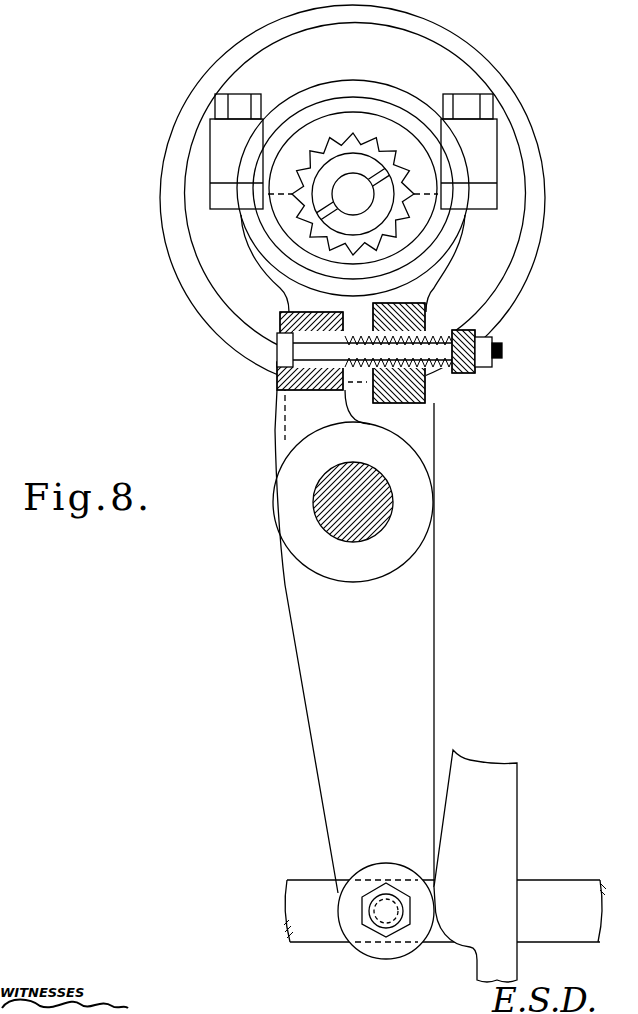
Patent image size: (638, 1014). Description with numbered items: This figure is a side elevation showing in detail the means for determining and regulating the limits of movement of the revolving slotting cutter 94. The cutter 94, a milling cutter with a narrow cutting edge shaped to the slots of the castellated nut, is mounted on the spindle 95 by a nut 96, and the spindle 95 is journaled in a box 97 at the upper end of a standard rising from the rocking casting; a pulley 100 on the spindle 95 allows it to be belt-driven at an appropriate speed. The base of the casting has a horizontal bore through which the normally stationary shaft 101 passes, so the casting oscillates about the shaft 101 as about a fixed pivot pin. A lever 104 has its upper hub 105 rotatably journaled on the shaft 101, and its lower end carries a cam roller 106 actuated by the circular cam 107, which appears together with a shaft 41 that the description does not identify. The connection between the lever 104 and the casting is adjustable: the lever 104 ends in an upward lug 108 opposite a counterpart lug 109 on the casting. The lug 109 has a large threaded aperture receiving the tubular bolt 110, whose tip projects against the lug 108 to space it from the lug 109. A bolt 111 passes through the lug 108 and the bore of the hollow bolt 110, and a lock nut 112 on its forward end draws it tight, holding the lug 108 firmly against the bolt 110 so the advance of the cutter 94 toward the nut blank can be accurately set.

The shaft 41 is at (575, 893).
The slotting cutter 94 is at (343, 146).
The spindle 95 is at (353, 194).
The nut 96 is at (353, 194).
The box 97 is at (353, 151).
The pulley 100 is at (495, 90).
The shaft 101 is at (355, 473).
The lever 104 is at (353, 554).
The upper hub 105 is at (353, 502).
The cam roller 106 is at (378, 870).
The circular cam 107 is at (475, 866).
The lug 108 is at (313, 390).
The lug 109 is at (426, 312).
The tubular bolt 110 is at (446, 372).
The bolt 111 is at (279, 335).
The lock nut 112 is at (493, 365).